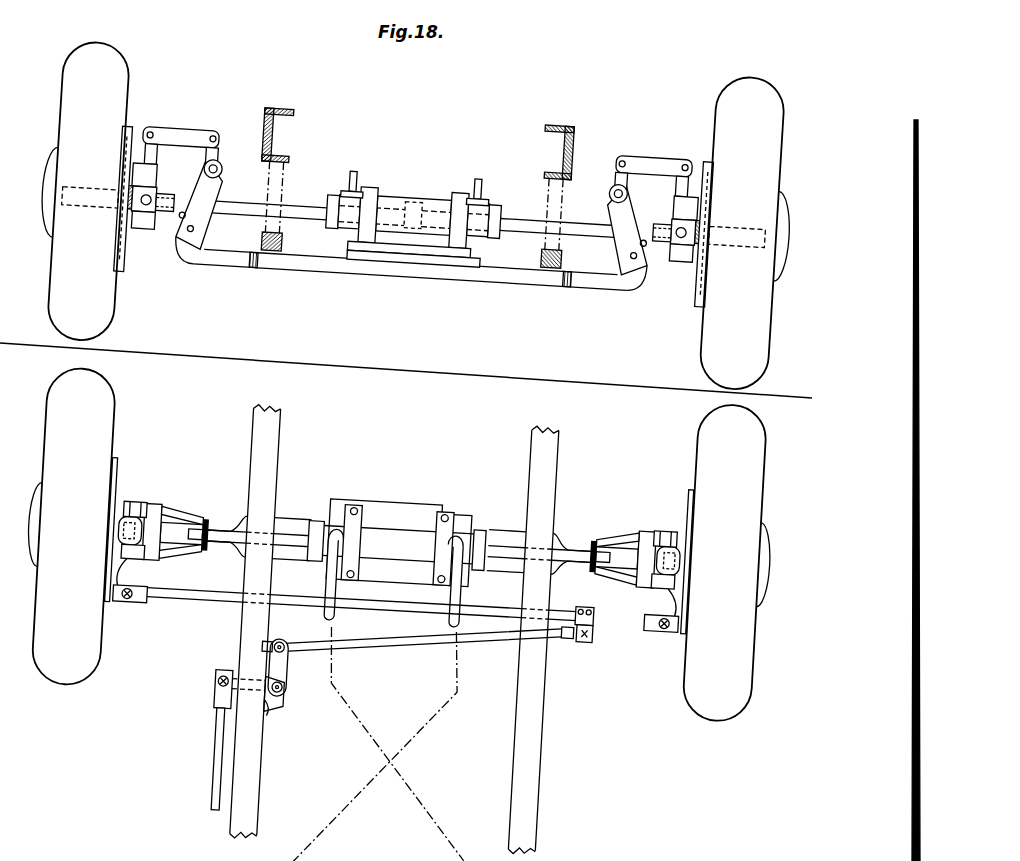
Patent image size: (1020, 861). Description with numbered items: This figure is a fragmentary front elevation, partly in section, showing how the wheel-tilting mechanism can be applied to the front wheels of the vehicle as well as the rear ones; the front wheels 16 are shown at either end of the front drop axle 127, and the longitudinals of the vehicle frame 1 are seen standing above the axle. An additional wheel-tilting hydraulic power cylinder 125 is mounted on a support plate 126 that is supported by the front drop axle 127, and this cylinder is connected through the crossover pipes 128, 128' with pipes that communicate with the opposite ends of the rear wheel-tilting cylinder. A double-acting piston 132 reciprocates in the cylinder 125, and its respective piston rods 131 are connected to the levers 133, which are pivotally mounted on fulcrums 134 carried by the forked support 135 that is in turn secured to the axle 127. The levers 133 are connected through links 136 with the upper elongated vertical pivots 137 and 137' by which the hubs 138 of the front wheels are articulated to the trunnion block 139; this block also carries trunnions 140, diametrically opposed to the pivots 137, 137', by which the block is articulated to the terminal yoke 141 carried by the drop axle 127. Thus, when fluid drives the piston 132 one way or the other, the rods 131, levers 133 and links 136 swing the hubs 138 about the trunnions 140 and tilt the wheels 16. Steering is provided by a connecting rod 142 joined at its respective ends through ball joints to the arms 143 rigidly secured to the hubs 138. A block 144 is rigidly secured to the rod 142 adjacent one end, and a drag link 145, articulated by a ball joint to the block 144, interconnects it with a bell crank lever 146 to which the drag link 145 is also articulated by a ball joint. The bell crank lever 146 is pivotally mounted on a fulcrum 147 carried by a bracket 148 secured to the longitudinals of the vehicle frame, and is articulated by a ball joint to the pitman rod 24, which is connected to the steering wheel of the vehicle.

The frame side member 1 is at (282, 110).
The wheel 16 is at (88, 46).
The pitman rod 24 is at (218, 738).
The wheel-tilting hydraulic power cylinder 125 is at (437, 203).
The support plate 126 is at (413, 259).
The front drop axle 127 is at (498, 278).
The crossover pipe 128 is at (383, 503).
The crossover pipe 128' is at (411, 508).
The piston rod 131 is at (302, 207).
The double-acting piston 132 is at (411, 200).
The lever 133 is at (218, 158).
The fulcrum 134 is at (220, 170).
The forked support 135 is at (200, 215).
The link 136 is at (183, 134).
The upper elongated vertical pivot 137 is at (374, 360).
The upper elongated vertical pivot 137' is at (413, 256).
The hub 138 is at (128, 128).
The trunnion block 139 is at (140, 163).
The trunnion 140 is at (152, 210).
The terminal yoke 141 is at (176, 198).
The connecting rod 142 is at (202, 598).
The arm 143 is at (130, 601).
The block 144 is at (590, 630).
The drag link 145 is at (383, 643).
The bell crank lever 146 is at (282, 667).
The fulcrum 147 is at (279, 689).
The bracket 148 is at (272, 700).